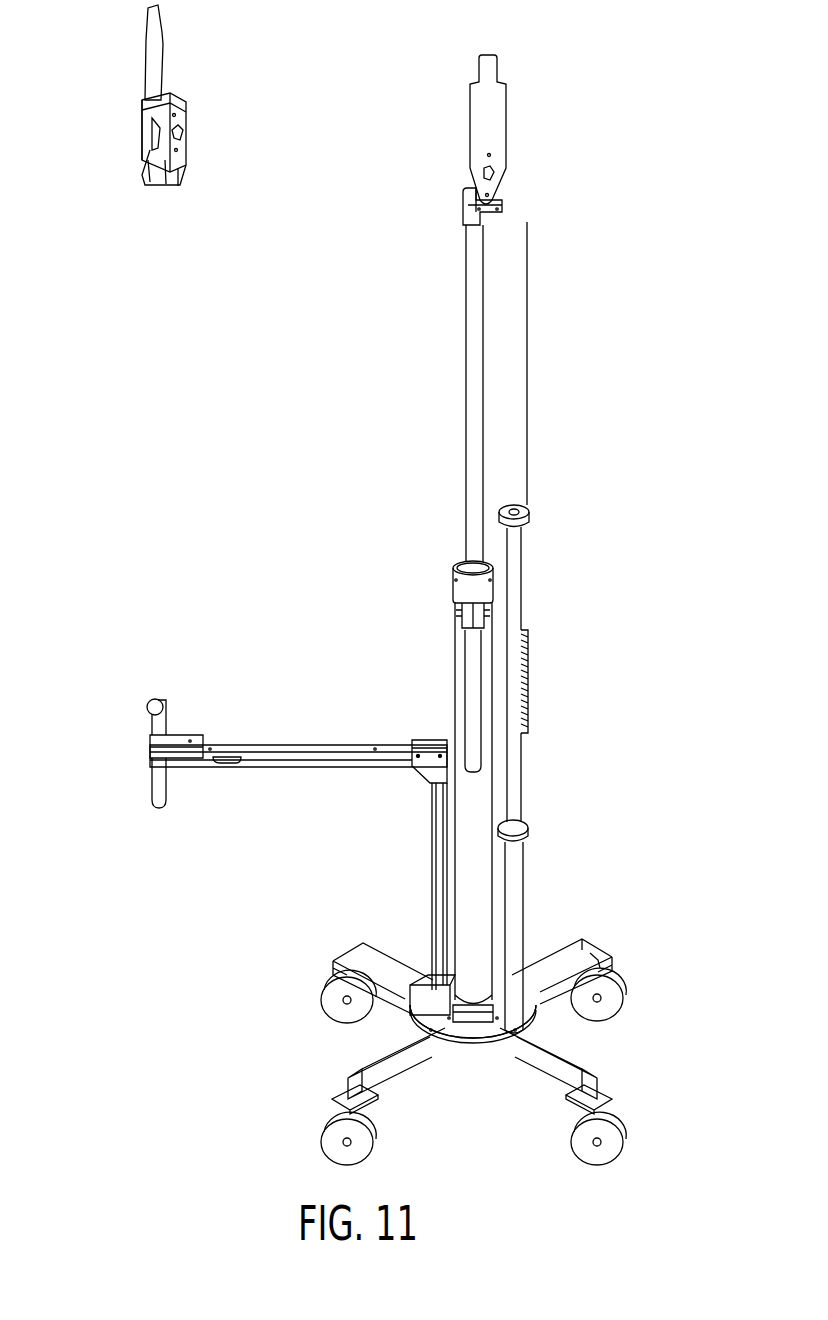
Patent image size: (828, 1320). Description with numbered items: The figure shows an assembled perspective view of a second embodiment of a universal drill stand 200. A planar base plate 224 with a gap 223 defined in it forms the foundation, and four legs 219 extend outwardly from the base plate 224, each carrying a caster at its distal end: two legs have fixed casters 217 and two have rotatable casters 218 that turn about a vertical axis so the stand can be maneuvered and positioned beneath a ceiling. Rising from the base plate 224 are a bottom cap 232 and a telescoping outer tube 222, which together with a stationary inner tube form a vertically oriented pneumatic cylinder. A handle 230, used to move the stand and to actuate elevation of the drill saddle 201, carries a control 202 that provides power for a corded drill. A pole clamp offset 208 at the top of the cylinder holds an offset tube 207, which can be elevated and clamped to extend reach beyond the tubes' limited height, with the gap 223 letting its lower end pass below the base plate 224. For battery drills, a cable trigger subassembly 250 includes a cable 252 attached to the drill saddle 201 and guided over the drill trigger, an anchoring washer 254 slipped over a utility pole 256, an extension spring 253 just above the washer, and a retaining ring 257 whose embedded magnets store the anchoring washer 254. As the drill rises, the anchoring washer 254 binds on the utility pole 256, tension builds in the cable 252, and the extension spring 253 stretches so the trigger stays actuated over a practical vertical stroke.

The universal drill stand 200 is at (168, 473).
The drill saddle 201 is at (170, 98).
The control 202 is at (180, 735).
The offset tube 207 is at (483, 350).
The pole clamp offset 208 is at (456, 585).
The fixed caster 217 is at (622, 987).
The rotatable caster 218 is at (326, 1130).
The leg 219 is at (548, 968).
The outer tube 222 is at (466, 892).
The gap 223 is at (446, 1036).
The base plate 224 is at (418, 1022).
The handle 230 is at (286, 768).
The bottom cap 232 is at (480, 1015).
The cable trigger subassembly 250 is at (528, 486).
The cable 252 is at (528, 384).
The extension spring 253 is at (528, 662).
The anchoring washer 254 is at (530, 822).
The utility pole 256 is at (516, 888).
The retaining ring 257 is at (529, 520).